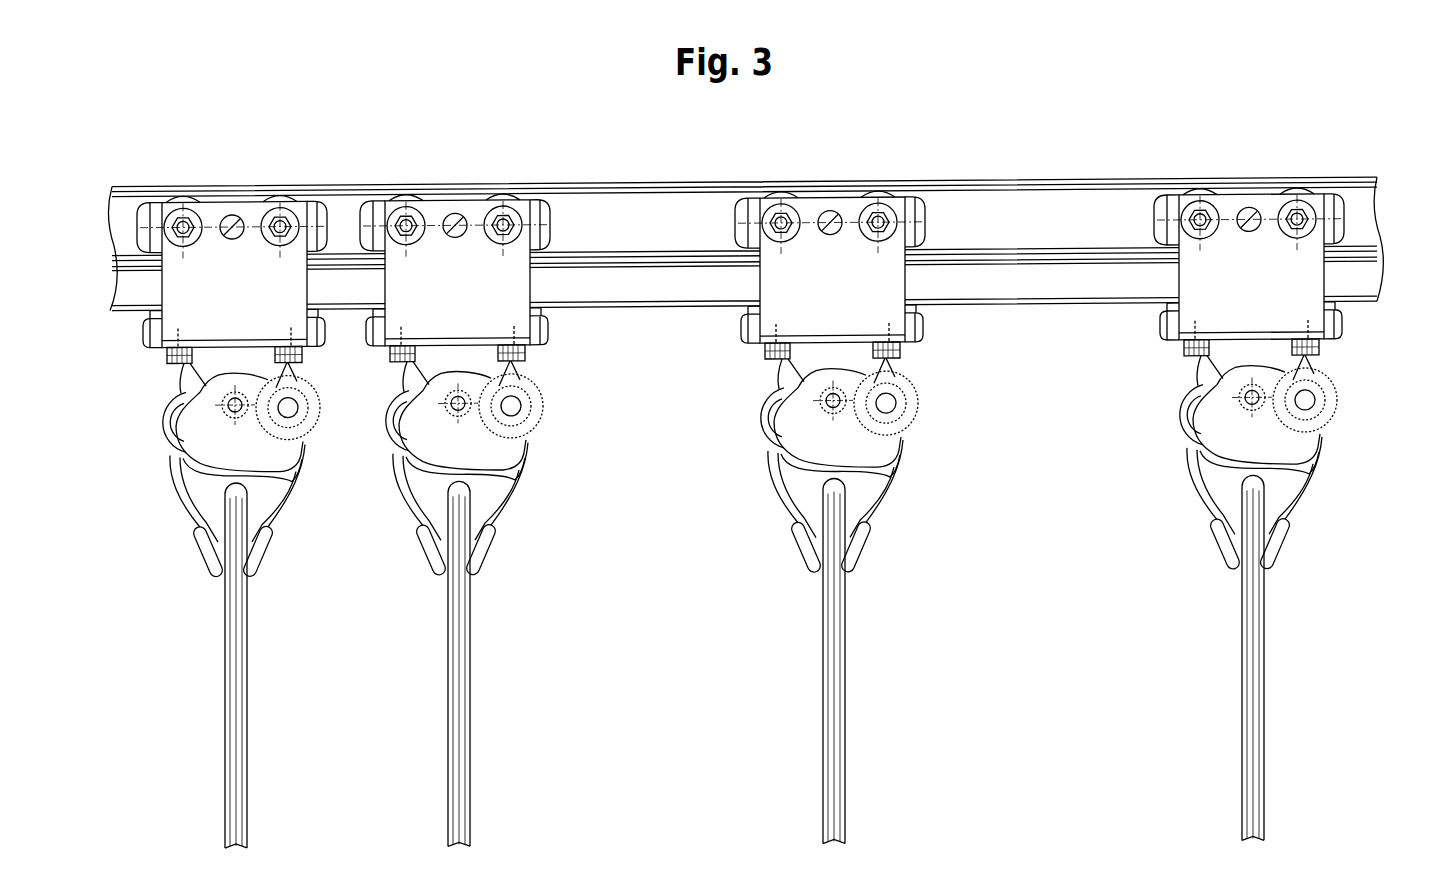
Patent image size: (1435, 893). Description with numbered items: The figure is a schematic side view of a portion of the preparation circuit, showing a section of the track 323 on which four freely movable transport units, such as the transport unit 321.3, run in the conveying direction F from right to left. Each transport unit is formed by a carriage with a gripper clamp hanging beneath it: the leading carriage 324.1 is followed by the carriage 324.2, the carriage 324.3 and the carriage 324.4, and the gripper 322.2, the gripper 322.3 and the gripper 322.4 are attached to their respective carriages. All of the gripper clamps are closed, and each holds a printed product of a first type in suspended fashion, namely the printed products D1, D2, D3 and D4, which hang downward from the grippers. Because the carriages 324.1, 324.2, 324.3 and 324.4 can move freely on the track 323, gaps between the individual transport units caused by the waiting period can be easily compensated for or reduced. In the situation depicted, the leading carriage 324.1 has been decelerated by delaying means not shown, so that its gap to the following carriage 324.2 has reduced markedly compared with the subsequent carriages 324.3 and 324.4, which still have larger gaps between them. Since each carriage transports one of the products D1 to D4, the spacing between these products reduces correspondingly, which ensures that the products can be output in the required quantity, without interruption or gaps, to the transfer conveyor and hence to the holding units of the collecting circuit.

The track 323 is at (1082, 223).
The conveying direction F is at (545, 131).
The transport unit 321.3 is at (912, 479).
The leading carriage 324.1 is at (255, 215).
The following carriage 324.2 is at (478, 215).
The carriage 324.3 is at (840, 263).
The carriage 324.4 is at (1217, 210).
The gripper 322.2 is at (510, 458).
The gripper 322.3 is at (888, 464).
The gripper 322.4 is at (1300, 455).
The printed product D1 is at (240, 665).
The printed product D2 is at (460, 667).
The printed product D3 is at (834, 648).
The printed product D4 is at (1255, 700).